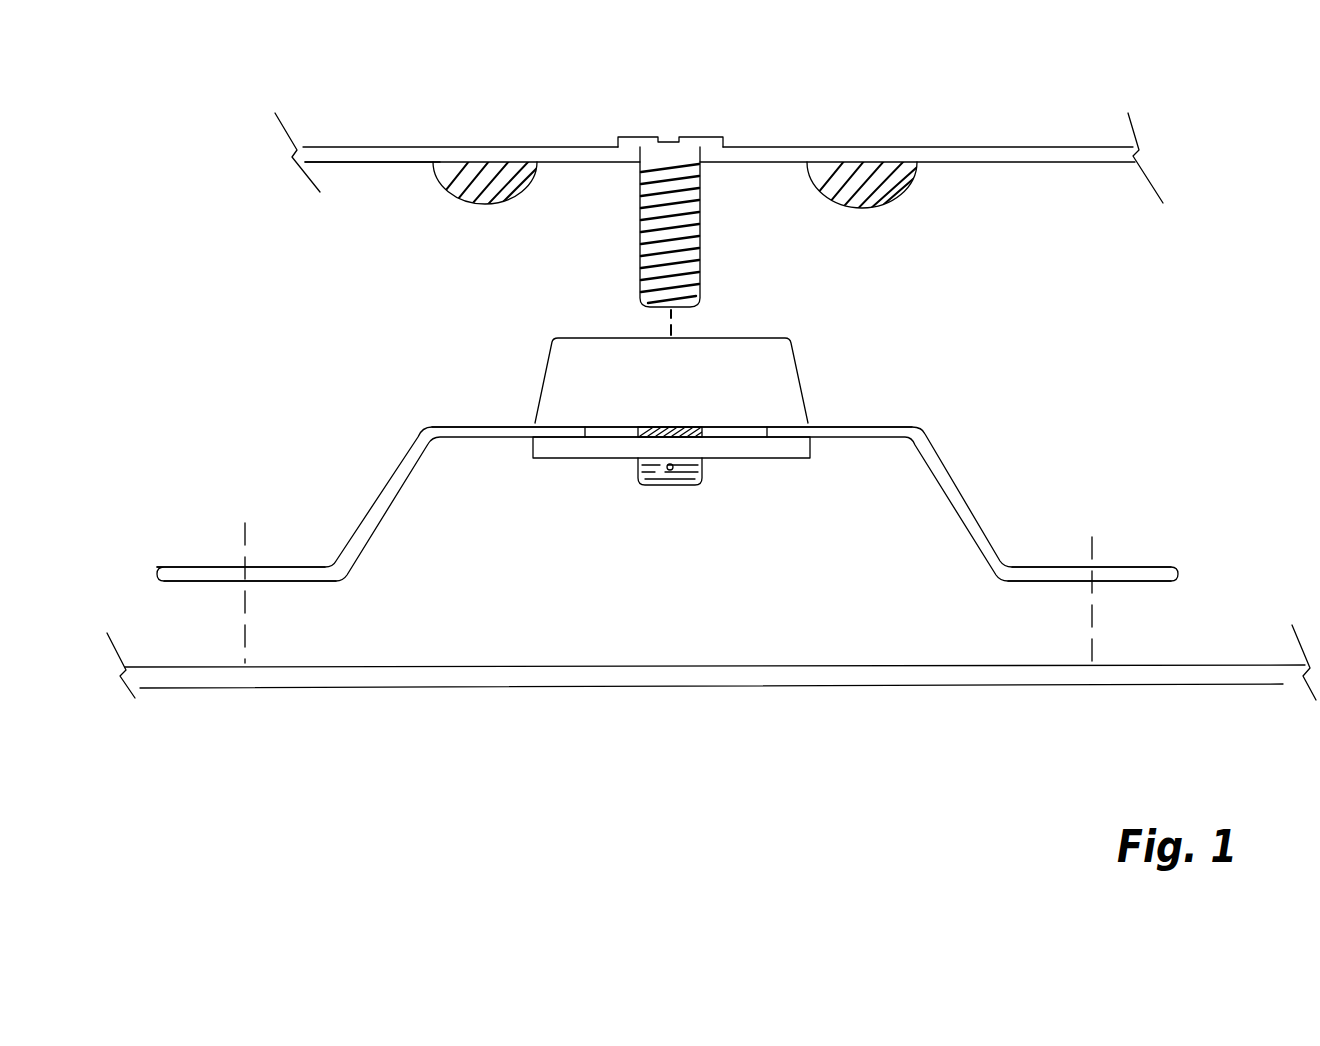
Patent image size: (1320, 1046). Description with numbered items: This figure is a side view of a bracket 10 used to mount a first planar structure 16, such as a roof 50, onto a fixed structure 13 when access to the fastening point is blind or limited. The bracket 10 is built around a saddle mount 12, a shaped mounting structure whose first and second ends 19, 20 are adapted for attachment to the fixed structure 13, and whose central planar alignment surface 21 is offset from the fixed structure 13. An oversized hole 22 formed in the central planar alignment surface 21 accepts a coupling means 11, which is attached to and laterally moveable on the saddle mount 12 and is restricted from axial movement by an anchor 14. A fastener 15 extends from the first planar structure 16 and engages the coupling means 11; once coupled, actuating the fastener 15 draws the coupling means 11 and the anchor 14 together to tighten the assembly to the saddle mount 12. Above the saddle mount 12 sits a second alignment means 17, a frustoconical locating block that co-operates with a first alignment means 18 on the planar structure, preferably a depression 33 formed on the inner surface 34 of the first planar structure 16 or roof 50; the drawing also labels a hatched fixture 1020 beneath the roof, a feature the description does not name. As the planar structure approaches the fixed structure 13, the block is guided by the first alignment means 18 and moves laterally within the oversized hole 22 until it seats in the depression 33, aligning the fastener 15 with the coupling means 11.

The bracket 10 is at (1107, 417).
The coupling means 11 is at (705, 468).
The saddle mount 12 is at (945, 458).
The fixed structure 13 is at (866, 688).
The anchor 14 is at (533, 450).
The fastener 15 is at (701, 233).
The first planar structure 16 is at (719, 149).
The roof structure 50 is at (937, 146).
The second alignment means 17 is at (808, 392).
The first alignment means 18 is at (855, 212).
The depression 33 is at (775, 165).
The first end 19 is at (196, 560).
The second end 20 is at (1125, 565).
The central planar alignment surface 21 is at (860, 426).
The oversized hole 22 is at (593, 432).
The inner surface 34 is at (383, 163).
The adhesive bump 1020 is at (503, 203).